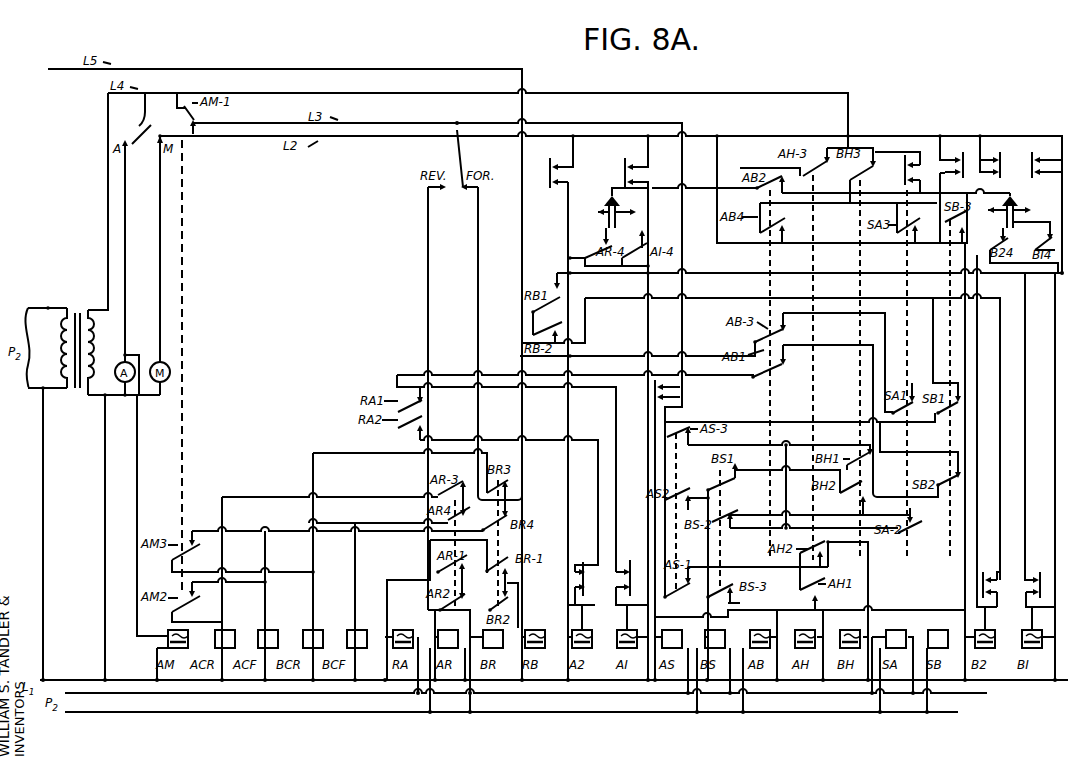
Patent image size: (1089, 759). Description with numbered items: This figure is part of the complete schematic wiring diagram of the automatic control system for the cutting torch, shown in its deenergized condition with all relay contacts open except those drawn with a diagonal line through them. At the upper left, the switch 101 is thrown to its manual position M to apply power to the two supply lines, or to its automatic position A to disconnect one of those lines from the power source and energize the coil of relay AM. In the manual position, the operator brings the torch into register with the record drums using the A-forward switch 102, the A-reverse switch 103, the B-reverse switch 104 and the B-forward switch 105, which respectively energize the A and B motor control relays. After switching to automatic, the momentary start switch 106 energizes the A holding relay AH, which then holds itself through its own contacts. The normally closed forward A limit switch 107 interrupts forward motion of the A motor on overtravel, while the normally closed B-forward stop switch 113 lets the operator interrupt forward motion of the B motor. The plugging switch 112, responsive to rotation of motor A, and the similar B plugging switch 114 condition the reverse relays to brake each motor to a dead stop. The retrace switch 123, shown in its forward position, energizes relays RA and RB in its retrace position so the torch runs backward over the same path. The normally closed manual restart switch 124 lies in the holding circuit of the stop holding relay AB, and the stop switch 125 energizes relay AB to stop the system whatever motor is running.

The switch 101 is at (140, 114).
The A-forward switch 102 is at (575, 170).
The A-reverse switch 103 is at (547, 168).
The B-reverse switch 104 is at (1004, 154).
The B-forward switch 105 is at (1022, 164).
The start switch 106 is at (685, 392).
The forward A limit switch 107 is at (630, 565).
The plugging switch 112 is at (598, 210).
The B-forward stop switch 113 is at (1043, 570).
The B plugging switch 114 is at (1040, 205).
The retrace switch 123 is at (452, 162).
The manual restart switch 124 is at (904, 172).
The stop switch 125 is at (964, 154).